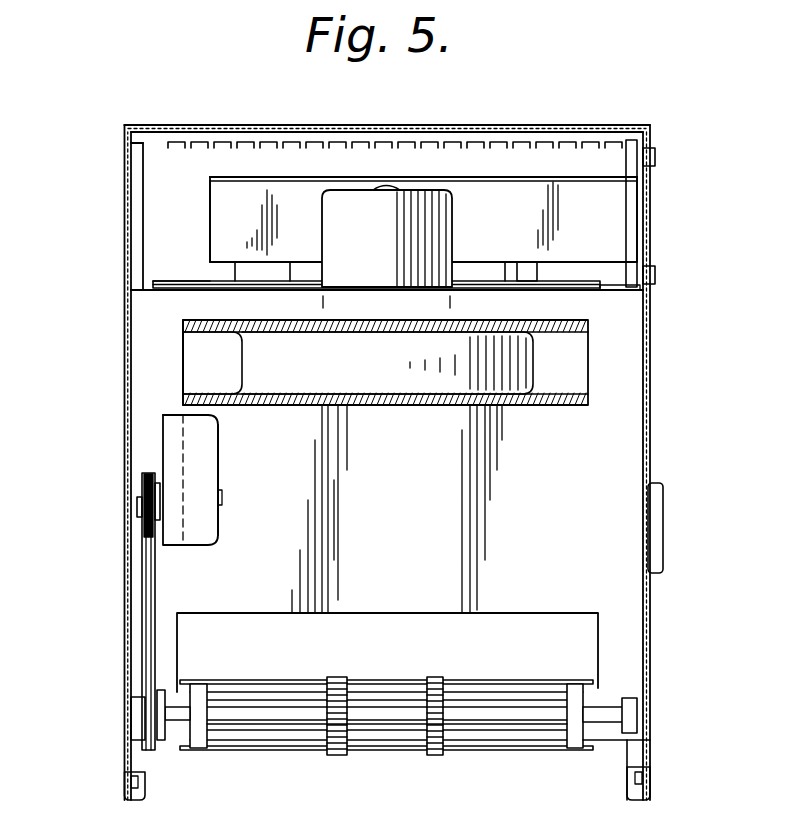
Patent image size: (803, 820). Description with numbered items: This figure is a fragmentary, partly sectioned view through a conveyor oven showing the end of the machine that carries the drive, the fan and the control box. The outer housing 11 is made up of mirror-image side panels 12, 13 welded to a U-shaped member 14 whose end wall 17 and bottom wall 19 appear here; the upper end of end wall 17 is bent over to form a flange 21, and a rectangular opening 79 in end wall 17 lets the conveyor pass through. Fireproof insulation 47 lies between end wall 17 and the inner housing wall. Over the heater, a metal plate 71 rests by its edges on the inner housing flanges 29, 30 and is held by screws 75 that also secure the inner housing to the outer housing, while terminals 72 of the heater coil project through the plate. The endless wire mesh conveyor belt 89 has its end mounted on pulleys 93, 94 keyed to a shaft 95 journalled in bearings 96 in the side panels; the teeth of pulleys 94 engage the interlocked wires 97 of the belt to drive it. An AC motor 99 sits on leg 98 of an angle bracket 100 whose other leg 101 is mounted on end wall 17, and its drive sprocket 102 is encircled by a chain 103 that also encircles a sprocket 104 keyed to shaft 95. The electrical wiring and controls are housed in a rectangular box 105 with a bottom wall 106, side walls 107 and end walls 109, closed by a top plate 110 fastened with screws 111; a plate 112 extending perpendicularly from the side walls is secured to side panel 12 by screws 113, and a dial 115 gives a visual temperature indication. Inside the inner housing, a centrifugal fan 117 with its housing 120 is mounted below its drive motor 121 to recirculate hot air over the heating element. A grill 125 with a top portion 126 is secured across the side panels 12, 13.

The outer housing 11 is at (124, 160).
The side panel 12 is at (651, 345).
The side panel 13 is at (124, 348).
The U-shaped member 14 is at (600, 750).
The end wall 17 is at (555, 478).
The bottom wall 19 is at (174, 751).
The flange 21 is at (142, 290).
The flange 29 is at (605, 291).
The flange 30 is at (176, 288).
The insulation 47 is at (183, 361).
The metal plate 71 is at (215, 281).
The terminals 72 is at (302, 256).
The screws 75 is at (158, 282).
The rectangular opening 79 is at (392, 612).
The endless wire mesh conveyor belt 89 is at (512, 680).
The pulleys 93 is at (202, 684).
The pulleys 94 is at (338, 676).
The shaft 95 is at (265, 720).
The bearings 96 is at (130, 734).
The interlocked wires 97 is at (397, 752).
The leg 98 is at (163, 427).
The AC motor 99 is at (218, 438).
The angle bracket 100 is at (163, 443).
The leg 101 is at (183, 462).
The drive sprocket 102 is at (137, 512).
The chain 103 is at (142, 580).
The sprocket 104 is at (131, 680).
The rectangular box 105 is at (210, 189).
The bottom wall 106 is at (547, 278).
The side walls 107 is at (515, 209).
The end walls 109 is at (210, 206).
The top plate 110 is at (448, 174).
The screws 111 is at (235, 176).
The plate 112 is at (651, 210).
The screws 113 is at (656, 158).
The dial 115 is at (663, 556).
The centrifugal fan 117 is at (445, 362).
The fan housing 120 is at (244, 360).
The drive motor 121 is at (372, 236).
The grill 125 is at (127, 125).
The top portion 126 is at (312, 125).